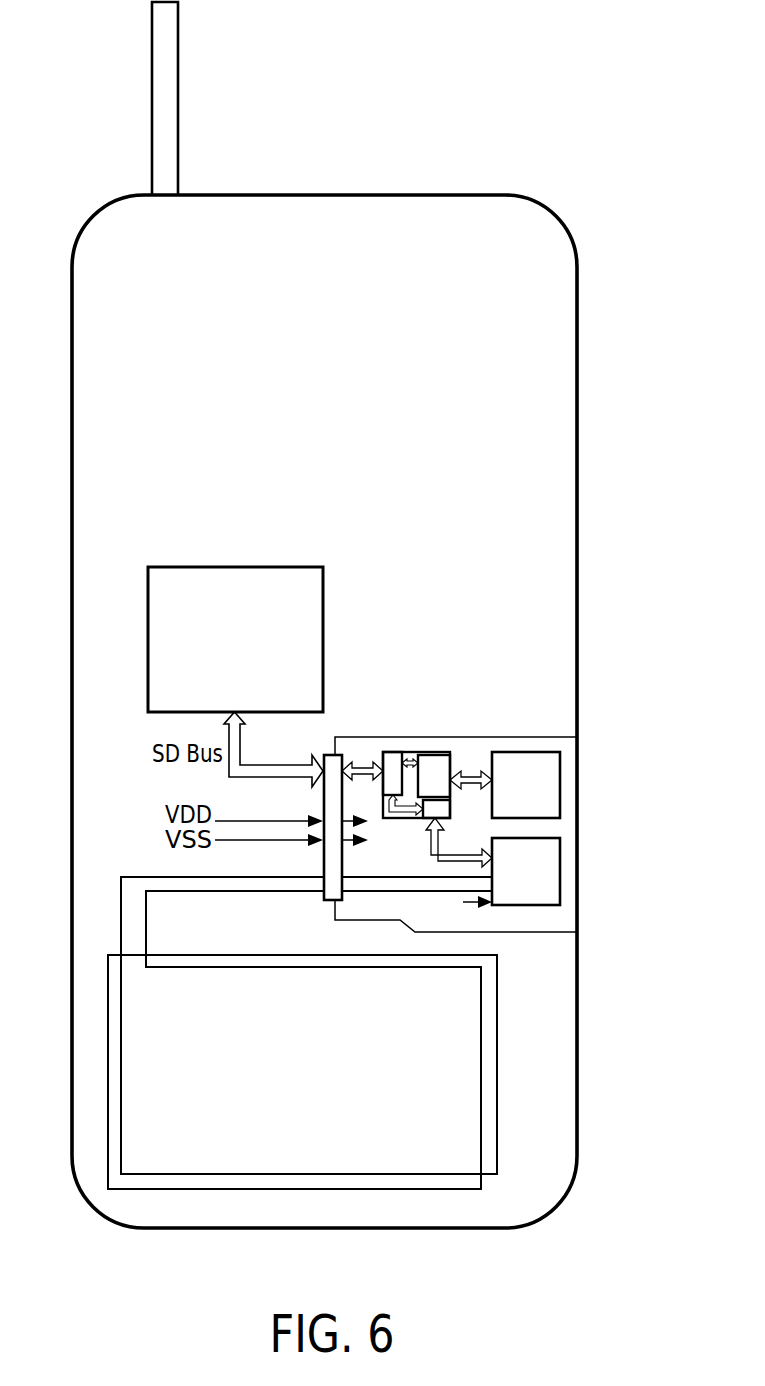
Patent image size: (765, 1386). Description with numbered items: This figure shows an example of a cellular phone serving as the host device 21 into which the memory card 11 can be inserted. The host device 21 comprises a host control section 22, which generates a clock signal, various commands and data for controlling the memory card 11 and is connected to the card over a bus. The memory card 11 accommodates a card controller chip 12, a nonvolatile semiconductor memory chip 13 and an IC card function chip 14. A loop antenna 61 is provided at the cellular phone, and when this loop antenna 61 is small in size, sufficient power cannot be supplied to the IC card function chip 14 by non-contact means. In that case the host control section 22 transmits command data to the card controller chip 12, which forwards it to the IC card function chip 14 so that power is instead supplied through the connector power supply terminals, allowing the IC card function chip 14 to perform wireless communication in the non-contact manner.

The host device 21 is at (577, 465).
The host control section 22 is at (279, 578).
The memory card 11 is at (473, 748).
The card controller chip 12 is at (413, 752).
The nonvolatile semiconductor memory chip 13 is at (552, 783).
The IC card function chip 14 is at (552, 875).
The loop antenna 61 is at (487, 1088).